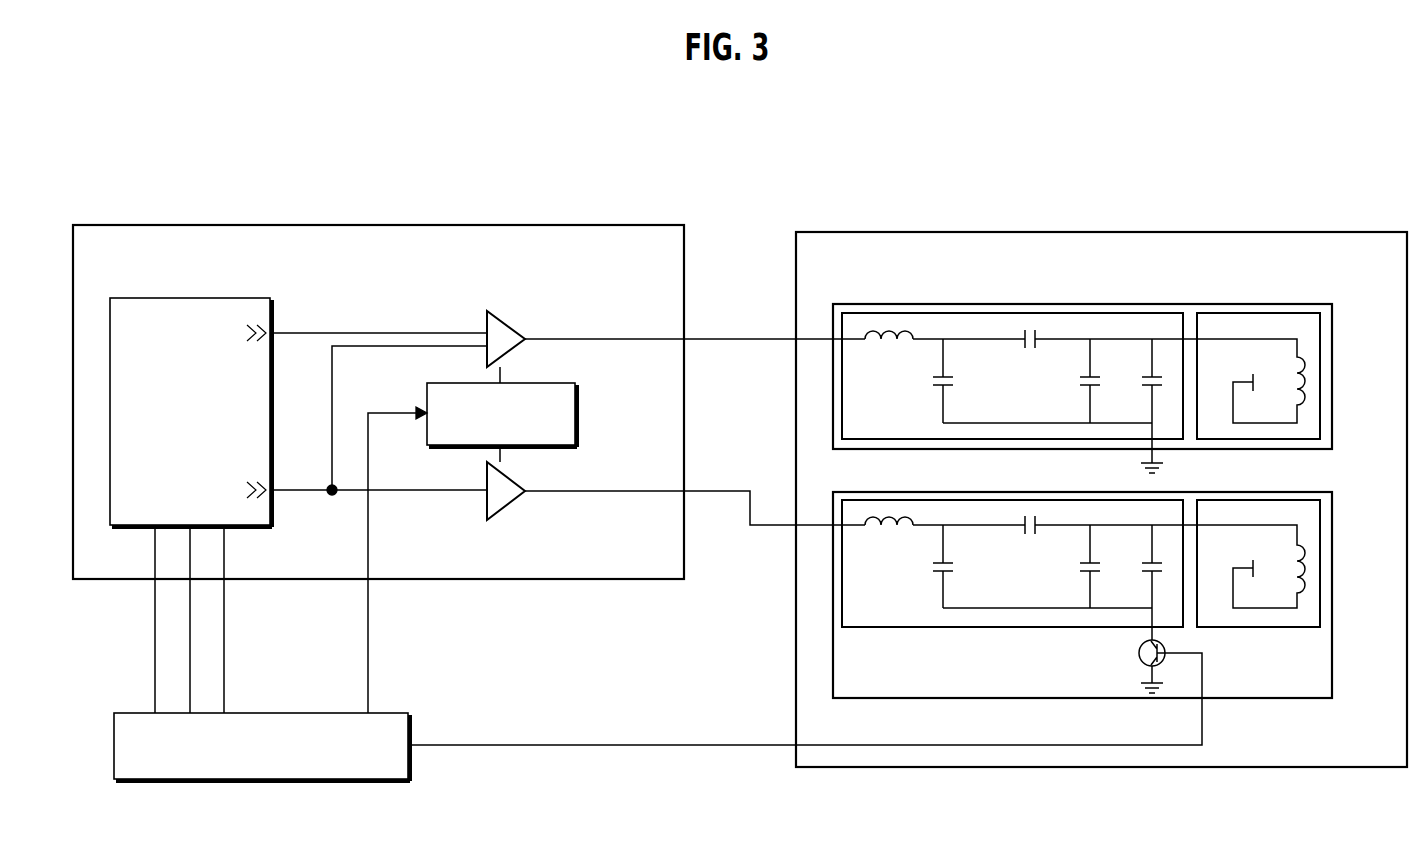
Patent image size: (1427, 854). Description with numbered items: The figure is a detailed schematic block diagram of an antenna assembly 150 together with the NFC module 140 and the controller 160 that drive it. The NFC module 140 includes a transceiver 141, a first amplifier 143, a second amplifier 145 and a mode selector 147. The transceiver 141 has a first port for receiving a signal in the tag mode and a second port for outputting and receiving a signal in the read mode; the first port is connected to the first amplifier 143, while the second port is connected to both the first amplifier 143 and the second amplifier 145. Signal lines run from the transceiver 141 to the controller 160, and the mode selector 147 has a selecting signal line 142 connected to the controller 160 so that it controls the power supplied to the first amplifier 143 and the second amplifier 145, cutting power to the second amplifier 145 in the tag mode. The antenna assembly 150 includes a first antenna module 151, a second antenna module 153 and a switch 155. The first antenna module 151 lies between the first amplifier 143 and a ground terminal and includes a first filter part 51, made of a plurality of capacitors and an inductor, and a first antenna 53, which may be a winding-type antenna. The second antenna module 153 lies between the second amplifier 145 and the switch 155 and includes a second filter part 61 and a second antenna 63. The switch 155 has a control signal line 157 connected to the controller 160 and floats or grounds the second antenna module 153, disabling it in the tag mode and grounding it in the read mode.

The NFC module 140 is at (233, 225).
The transceiver 141 is at (191, 298).
The control line between controller and mode selector 142 is at (368, 648).
The first amplifier 143 is at (505, 320).
The second amplifier 145 is at (500, 510).
The mode selector 147 is at (577, 417).
The antenna assembly 150 is at (868, 232).
The first antenna module 151 is at (906, 304).
The first filter part 51 is at (982, 313).
The first antenna 53 is at (1267, 313).
The second antenna module 153 is at (1310, 698).
The second filter part 61 is at (943, 627).
The second antenna 63 is at (1277, 627).
The switch 155 is at (1138, 653).
The control signal line 157 is at (998, 745).
The controller 160 is at (340, 781).